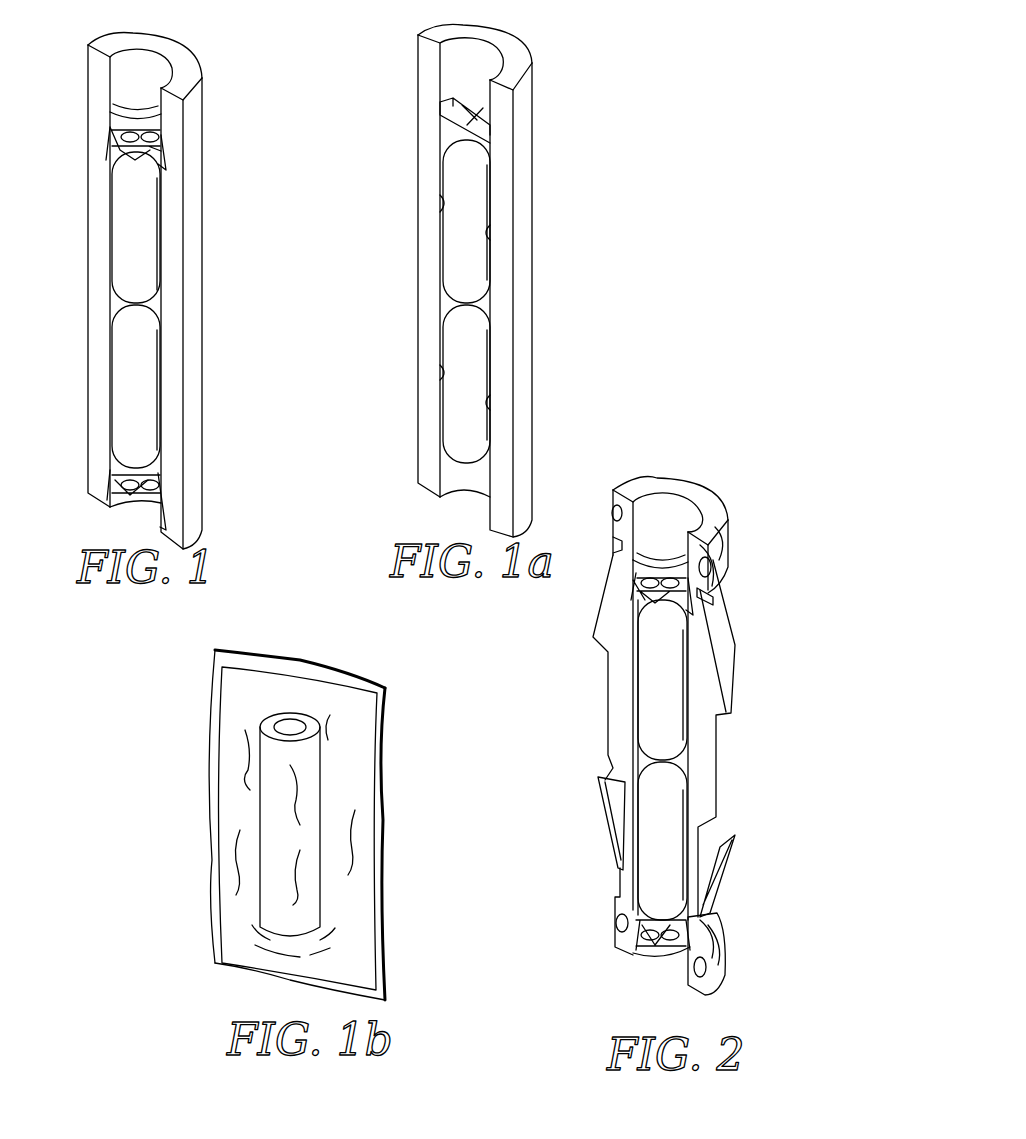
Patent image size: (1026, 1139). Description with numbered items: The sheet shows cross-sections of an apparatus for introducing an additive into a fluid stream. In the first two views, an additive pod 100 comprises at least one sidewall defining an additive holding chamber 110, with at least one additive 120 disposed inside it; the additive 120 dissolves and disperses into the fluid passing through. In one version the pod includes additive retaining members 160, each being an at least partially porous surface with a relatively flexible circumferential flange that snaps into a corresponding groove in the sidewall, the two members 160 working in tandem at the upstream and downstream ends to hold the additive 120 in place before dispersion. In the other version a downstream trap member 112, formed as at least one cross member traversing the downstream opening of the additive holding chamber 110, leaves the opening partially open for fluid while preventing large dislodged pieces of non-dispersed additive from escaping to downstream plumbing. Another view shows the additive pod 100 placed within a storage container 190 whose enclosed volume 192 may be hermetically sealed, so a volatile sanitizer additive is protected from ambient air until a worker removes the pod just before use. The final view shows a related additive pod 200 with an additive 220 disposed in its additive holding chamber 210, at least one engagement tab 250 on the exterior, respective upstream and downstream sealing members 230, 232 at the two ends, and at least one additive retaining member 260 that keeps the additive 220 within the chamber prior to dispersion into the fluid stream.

In FIG. 1, the additive pod 100 is at (227, 110).
In FIG. 1A, the additive pod 100 is at (584, 92).
In FIG. 1B, the additive pod 100 is at (260, 898).
In FIG. 1, the additive holding chamber 110 is at (117, 303).
In FIG. 1A, the additive holding chamber 110 is at (447, 302).
In FIG. 1A, the downstream trap member 112 is at (483, 103).
In FIG. 1, the additive 120 is at (148, 240).
In FIG. 1A, the additive 120 is at (478, 190).
In FIG. 1, the additive retaining member 160 is at (161, 167).
In FIG. 1B, the storage container 190 is at (208, 723).
In FIG. 1B, the enclosed volume 192 is at (348, 755).
In FIG. 2, the additive pod 200 is at (675, 447).
In FIG. 2, the additive holding chamber 210 is at (642, 750).
In FIG. 2, the additive 220 is at (665, 722).
In FIG. 2, the upstream sealing member 230 is at (712, 962).
In FIG. 2, the downstream sealing member 232 is at (723, 552).
In FIG. 2, the engagement tab 250 is at (727, 868).
In FIG. 2, the additive retaining member 260 is at (680, 612).